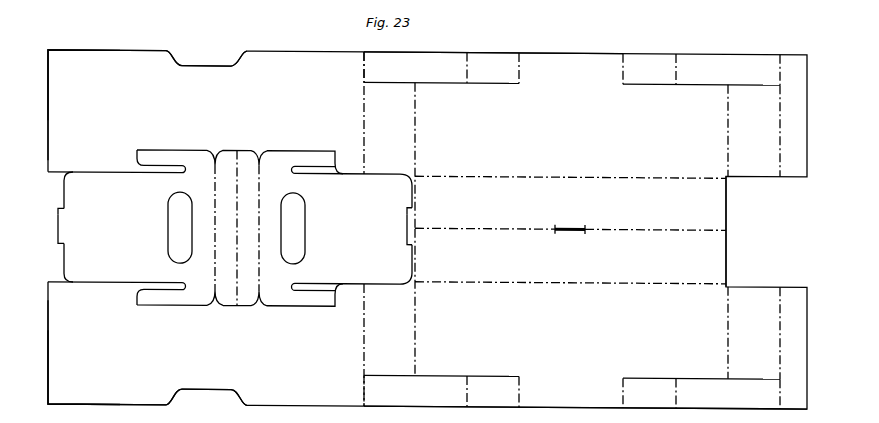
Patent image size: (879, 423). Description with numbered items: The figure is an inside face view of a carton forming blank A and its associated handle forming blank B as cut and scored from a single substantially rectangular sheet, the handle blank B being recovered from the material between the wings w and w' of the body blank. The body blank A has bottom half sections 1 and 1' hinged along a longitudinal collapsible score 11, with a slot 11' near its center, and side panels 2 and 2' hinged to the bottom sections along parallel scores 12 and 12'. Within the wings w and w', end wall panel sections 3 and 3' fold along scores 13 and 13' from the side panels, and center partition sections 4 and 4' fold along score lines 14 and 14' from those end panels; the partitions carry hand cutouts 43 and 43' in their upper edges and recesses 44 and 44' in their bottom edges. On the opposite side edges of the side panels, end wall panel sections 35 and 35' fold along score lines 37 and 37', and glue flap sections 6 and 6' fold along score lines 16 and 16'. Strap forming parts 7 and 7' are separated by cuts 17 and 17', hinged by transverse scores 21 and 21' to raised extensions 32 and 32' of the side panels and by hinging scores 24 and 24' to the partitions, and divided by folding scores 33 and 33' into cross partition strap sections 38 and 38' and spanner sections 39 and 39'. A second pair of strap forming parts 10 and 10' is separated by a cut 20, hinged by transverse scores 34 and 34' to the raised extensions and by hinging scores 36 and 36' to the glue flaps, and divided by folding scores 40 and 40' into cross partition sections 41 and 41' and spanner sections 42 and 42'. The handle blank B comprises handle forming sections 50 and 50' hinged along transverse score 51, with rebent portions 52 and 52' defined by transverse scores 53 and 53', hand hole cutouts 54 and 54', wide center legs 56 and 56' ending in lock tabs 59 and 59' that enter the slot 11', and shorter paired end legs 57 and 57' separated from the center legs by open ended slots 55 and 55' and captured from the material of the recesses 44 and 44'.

The bottom half section 1 is at (519, 200).
The bottom half section 1' is at (522, 250).
The side panel 2 is at (564, 125).
The side panel 2' is at (553, 321).
The end wall panel section 3 is at (386, 125).
The end wall panel section 3' is at (386, 333).
The center partition section 4 is at (138, 106).
The center partition section 4' is at (141, 352).
The glue flap section 6 is at (790, 115).
The glue flap section 6' is at (790, 326).
The strap forming part 7 is at (493, 34).
The strap forming part 7' is at (493, 414).
The strap forming part 10 is at (427, 210).
The strap forming part 10' is at (715, 415).
The collapsible score 11 is at (570, 221).
The slot 11' is at (575, 216).
The score 12 is at (570, 169).
The score 12' is at (570, 294).
The folding score 13 is at (429, 156).
The folding score 13' is at (430, 302).
The score line 14 is at (351, 113).
The score line 14' is at (349, 345).
The score line 16 is at (763, 131).
The score line 16' is at (763, 333).
The longitudinally extending cut 17 is at (441, 94).
The longitudinally extending cut 17' is at (572, 366).
The longitudinally extending cut 20 is at (709, 82).
The transverse score 21 is at (524, 54).
The transverse score 21' is at (532, 391).
The hinging score 24 is at (344, 67).
The hinging score 24' is at (347, 390).
The raised extension 32 is at (564, 49).
The raised extension 32' is at (573, 391).
The folding score 33 is at (472, 54).
The folding score 33' is at (476, 379).
The transverse score 34 is at (622, 56).
The transverse score 34' is at (613, 383).
The end wall panel section 35 is at (746, 128).
The end wall panel section 35' is at (747, 331).
The hinging score 36 is at (790, 56).
The hinging score 36' is at (803, 394).
The score line 37 is at (710, 131).
The score line 37' is at (712, 333).
The cross partition strap section 38 is at (492, 66).
The cross partition strap section 38' is at (492, 388).
The spanner section 39 is at (413, 66).
The spanner section 39' is at (410, 388).
The folding score 40 is at (670, 56).
The folding score 40' is at (656, 383).
The cross partition section 41 is at (645, 69).
The cross partition section 41' is at (642, 391).
The spanner section 42 is at (728, 68).
The spanner section 42' is at (718, 392).
The hand cutout 43 is at (206, 47).
The hand cutout 43' is at (206, 402).
The recess 44 is at (242, 144).
The recess 44' is at (220, 311).
The handle forming section 50 is at (369, 229).
The handle forming section 50' is at (142, 220).
The transverse score 51 is at (238, 296).
The rebent portion 52 is at (246, 228).
The rebent portion 52' is at (225, 219).
The transverse score 53 is at (271, 228).
The transverse score 53' is at (200, 228).
The hand hole cutout 54 is at (304, 226).
The hand hole cutout 54' is at (165, 227).
The open ended slot 55 is at (325, 228).
The open ended slot 55' is at (117, 227).
The center leg 56 is at (414, 234).
The center leg 56' is at (59, 228).
The end leg 57 is at (333, 227).
The end leg 57' is at (165, 226).
The lock tab 59 is at (428, 213).
The lock tab 59' is at (48, 202).
The carton forming blank A is at (731, 204).
The handle forming blank B is at (56, 263).
The wing w is at (74, 67).
The wing w' is at (73, 367).